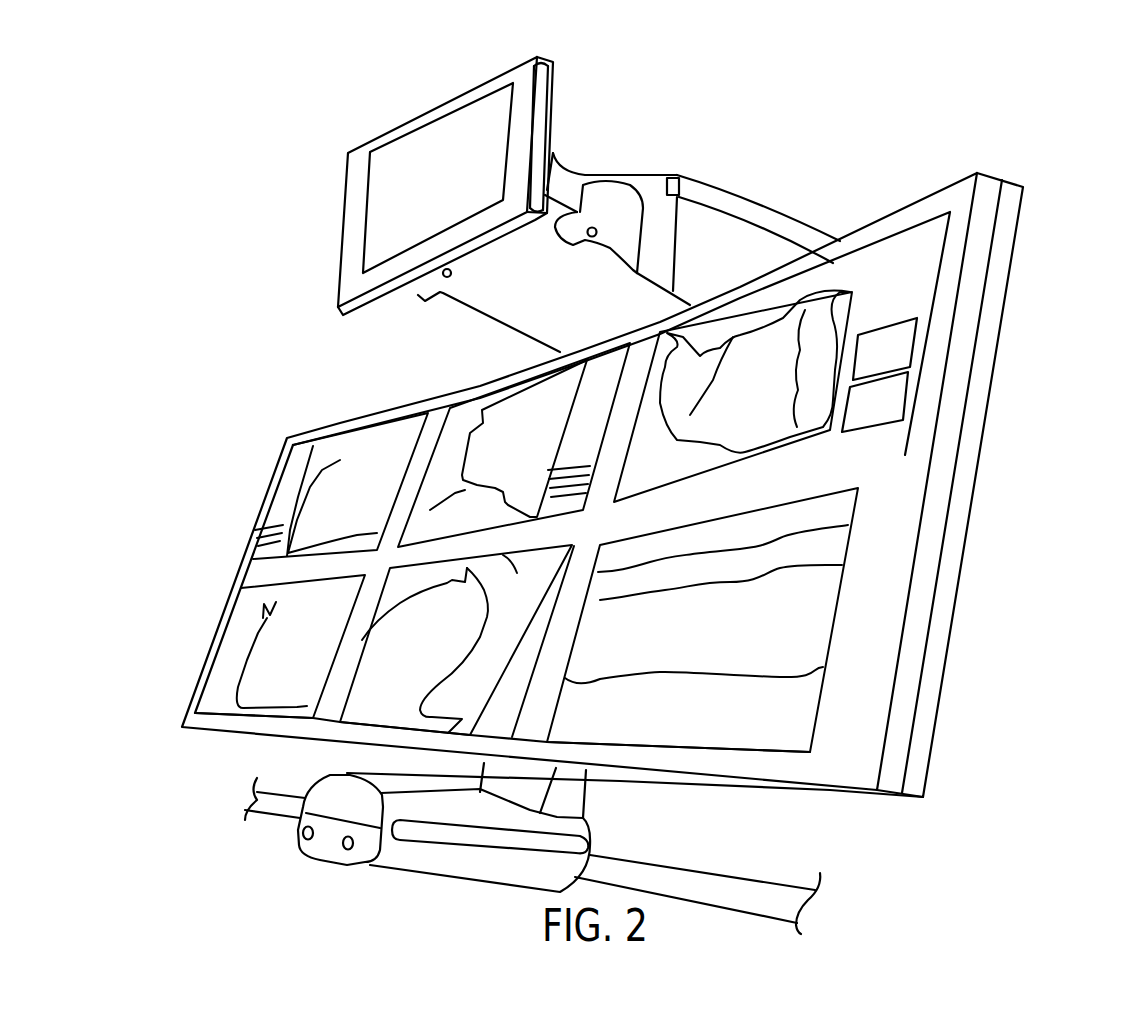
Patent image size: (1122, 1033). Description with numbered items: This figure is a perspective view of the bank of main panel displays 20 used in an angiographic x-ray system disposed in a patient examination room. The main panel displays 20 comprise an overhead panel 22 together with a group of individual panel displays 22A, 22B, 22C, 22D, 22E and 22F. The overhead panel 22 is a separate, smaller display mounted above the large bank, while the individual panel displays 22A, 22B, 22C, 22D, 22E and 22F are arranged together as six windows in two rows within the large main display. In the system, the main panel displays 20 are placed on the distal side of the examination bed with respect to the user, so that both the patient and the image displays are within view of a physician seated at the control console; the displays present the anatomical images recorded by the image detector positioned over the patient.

The main panel displays 20 is at (1027, 436).
The overhead panel 22 is at (437, 103).
The panel display 22A is at (293, 478).
The panel display 22B is at (552, 395).
The panel display 22C is at (785, 317).
The panel display 22D is at (237, 650).
The panel display 22E is at (357, 718).
The panel display 22F is at (676, 736).